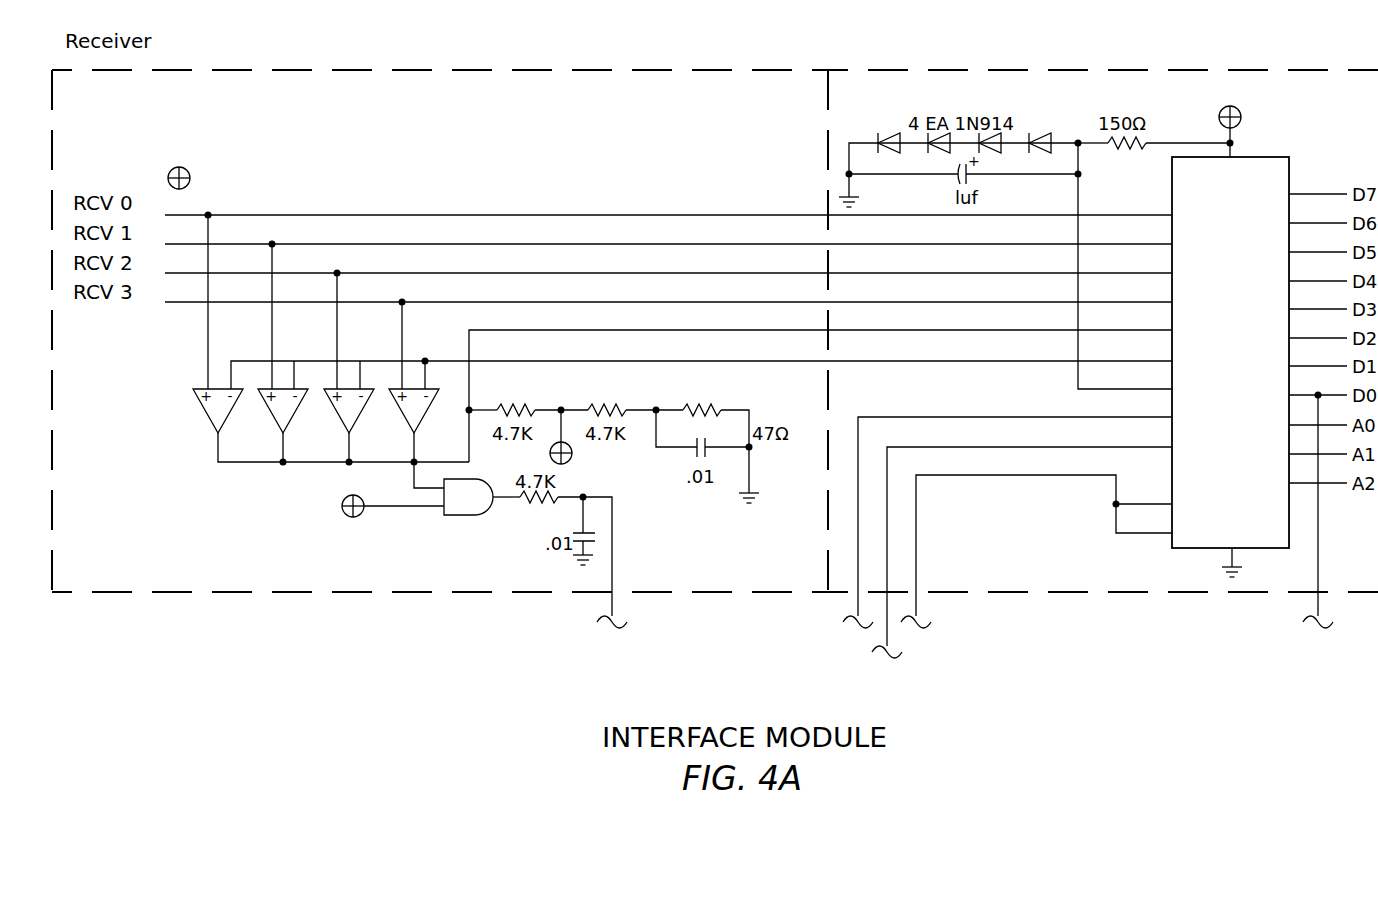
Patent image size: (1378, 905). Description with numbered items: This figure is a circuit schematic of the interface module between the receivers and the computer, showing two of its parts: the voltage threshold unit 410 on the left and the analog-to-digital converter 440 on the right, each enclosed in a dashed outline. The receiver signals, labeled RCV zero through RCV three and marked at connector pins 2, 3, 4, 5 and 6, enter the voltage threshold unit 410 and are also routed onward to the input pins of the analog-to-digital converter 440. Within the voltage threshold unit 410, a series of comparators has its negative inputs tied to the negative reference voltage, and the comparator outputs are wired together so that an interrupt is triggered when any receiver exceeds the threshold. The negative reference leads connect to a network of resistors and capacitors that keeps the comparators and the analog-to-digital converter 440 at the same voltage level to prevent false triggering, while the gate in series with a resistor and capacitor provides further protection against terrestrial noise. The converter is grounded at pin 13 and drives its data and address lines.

The voltage threshold unit 410 is at (99, 96).
The analog-to-digital converter 440 is at (874, 96).
The receiver input RCV 0 2 is at (153, 214).
The receiver input RCV 1 3 is at (153, 244).
The receiver input RCV 2 4 is at (153, 274).
The receiver input RCV 3 5 is at (153, 303).
The receiver input pin 6 is at (153, 327).
The ground pin 13 is at (1247, 563).